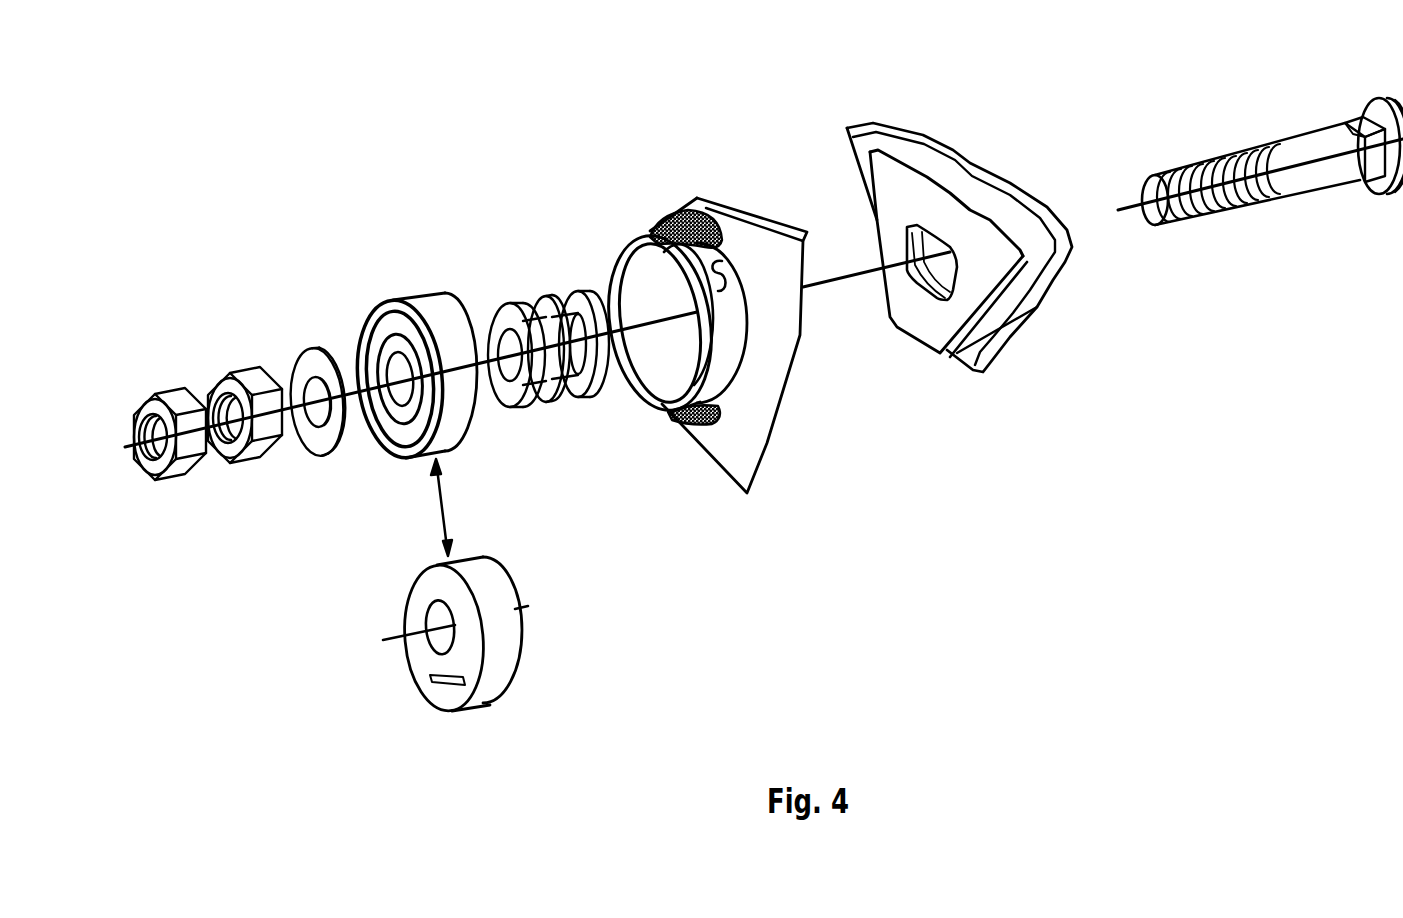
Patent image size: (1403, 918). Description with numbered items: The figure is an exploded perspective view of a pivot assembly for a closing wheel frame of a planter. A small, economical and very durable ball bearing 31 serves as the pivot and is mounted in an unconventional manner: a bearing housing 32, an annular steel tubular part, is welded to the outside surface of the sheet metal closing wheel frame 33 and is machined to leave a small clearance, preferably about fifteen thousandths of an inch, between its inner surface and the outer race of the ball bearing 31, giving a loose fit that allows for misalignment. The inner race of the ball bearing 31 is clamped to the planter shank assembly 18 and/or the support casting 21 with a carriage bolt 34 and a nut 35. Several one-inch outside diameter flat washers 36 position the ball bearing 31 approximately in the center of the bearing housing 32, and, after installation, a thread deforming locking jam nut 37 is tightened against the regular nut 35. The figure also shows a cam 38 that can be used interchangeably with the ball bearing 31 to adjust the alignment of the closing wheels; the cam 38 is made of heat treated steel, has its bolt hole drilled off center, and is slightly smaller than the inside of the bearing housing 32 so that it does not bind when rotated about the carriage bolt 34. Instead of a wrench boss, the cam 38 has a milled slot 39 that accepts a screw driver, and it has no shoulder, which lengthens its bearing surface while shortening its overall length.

The planter shank assembly 18 is at (910, 340).
The support casting 21 is at (1040, 307).
The ball bearing 31 is at (403, 300).
The bearing housing 32 is at (724, 276).
The closing wheel frame 33 is at (760, 443).
The carriage bolt 34 is at (1183, 217).
The nut 35 is at (252, 460).
The flat washers 36 is at (613, 392).
The thread deforming locking jam nut 37 is at (153, 477).
The cam 38 is at (520, 657).
The milled slot 39 is at (438, 681).